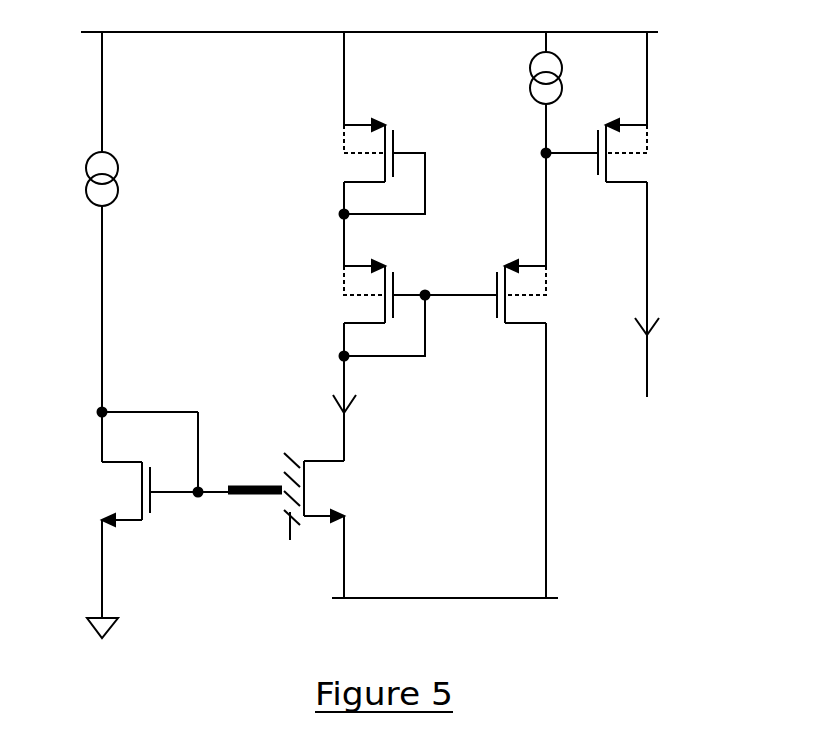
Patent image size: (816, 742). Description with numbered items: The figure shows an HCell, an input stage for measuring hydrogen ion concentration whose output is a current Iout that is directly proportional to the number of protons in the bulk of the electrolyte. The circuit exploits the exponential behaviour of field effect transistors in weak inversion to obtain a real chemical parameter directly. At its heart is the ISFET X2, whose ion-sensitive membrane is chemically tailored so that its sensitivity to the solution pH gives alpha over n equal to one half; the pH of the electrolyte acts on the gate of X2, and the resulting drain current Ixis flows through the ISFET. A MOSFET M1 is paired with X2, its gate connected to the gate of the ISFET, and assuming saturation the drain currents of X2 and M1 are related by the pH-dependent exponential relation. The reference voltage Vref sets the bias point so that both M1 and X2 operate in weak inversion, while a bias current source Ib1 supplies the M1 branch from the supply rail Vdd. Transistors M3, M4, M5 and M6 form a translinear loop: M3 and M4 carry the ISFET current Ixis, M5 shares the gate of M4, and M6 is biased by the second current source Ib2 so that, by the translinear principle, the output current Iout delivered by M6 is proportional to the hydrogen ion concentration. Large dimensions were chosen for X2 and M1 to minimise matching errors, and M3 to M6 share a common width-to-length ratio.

The MOSFET M1 is at (157, 523).
The transistor M3 is at (363, 149).
The transistor M4 is at (399, 360).
The transistor M5 is at (545, 429).
The transistor M6 is at (618, 214).
The ISFET X2 is at (286, 525).
The bias current source Ib1 is at (125, 222).
The bias current source Ib2 is at (566, 149).
The ISFET drain current Ixis is at (366, 407).
The output current Iout is at (670, 330).
The supply voltage Vdd is at (390, 25).
The reference voltage Vref is at (467, 591).
The pH input pH is at (295, 537).